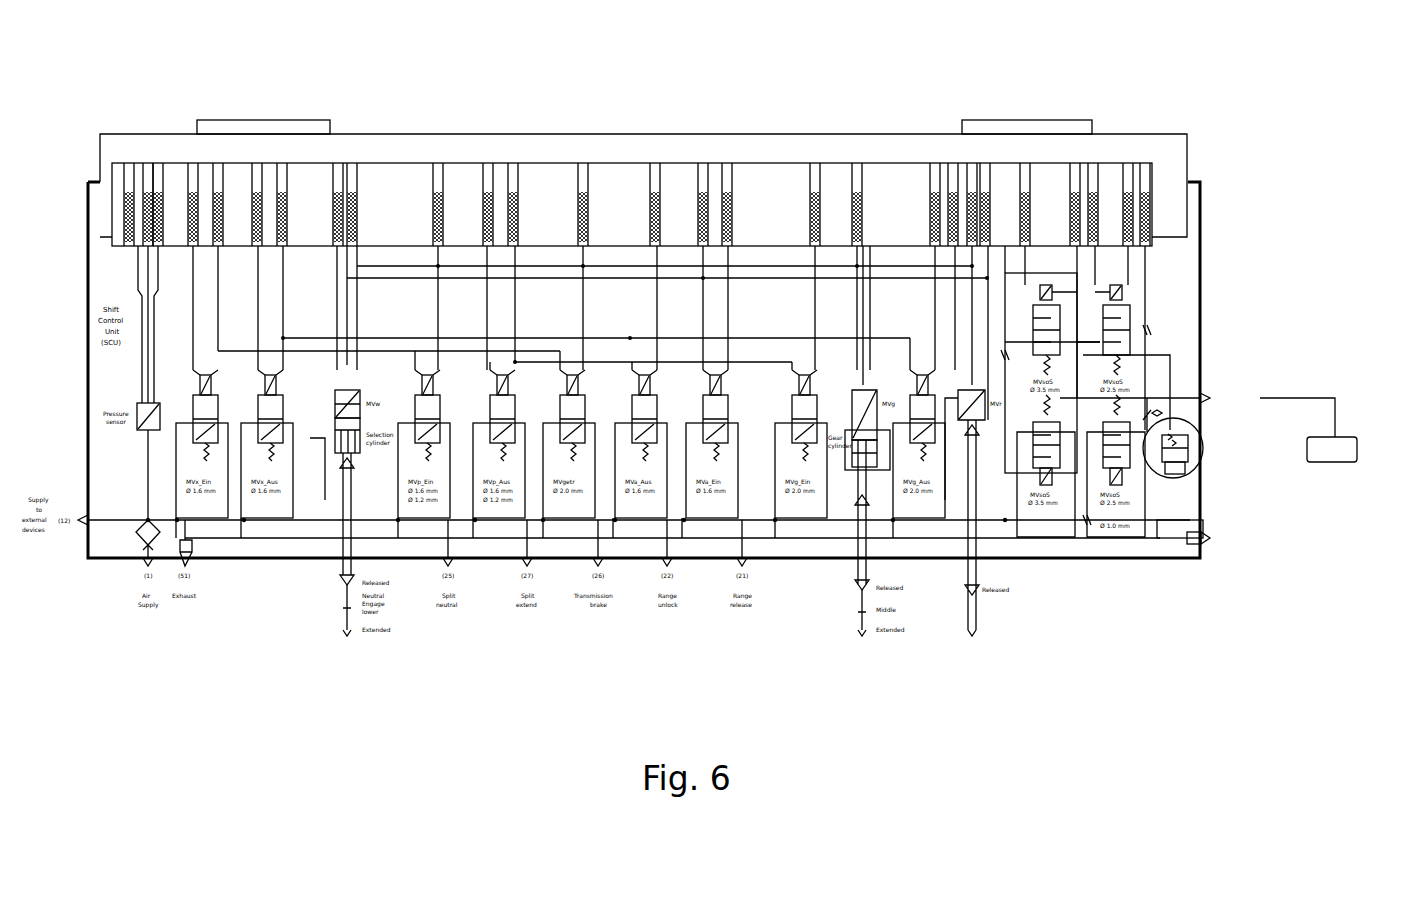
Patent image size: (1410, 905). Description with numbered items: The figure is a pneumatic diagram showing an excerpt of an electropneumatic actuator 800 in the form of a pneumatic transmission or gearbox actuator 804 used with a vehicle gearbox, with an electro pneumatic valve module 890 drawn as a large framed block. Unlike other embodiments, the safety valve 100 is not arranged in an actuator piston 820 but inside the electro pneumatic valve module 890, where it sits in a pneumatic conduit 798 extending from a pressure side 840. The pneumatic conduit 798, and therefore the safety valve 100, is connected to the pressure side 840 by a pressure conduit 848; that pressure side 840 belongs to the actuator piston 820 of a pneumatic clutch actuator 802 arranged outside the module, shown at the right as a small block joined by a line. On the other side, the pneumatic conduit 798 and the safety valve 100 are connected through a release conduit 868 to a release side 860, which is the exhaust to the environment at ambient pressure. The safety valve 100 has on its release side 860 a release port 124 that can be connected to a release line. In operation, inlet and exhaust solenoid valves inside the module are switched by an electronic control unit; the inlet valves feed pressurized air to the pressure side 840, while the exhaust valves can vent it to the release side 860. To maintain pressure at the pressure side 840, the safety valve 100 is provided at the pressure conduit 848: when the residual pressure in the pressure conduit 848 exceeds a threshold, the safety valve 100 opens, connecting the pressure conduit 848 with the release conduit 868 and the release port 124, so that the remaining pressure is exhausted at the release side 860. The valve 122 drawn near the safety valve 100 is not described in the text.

The electropneumatic actuator 800 is at (672, 142).
The pneumatic transmission or gearbox actuator 804 is at (1237, 64).
The electro pneumatic valve module 890 is at (1193, 200).
The pressure conduit 848 is at (1157, 410).
The pressure side 840 is at (1212, 393).
The release port 124 is at (1195, 433).
The pneumatic clutch actuator 802 is at (1330, 455).
The actuator piston 820 is at (1338, 455).
The safety valve 100 is at (1267, 481).
The pneumatic conduit 798 is at (1267, 481).
The valve 122 is at (1160, 435).
The release conduit 868 is at (1172, 540).
The release side 860 is at (1213, 548).